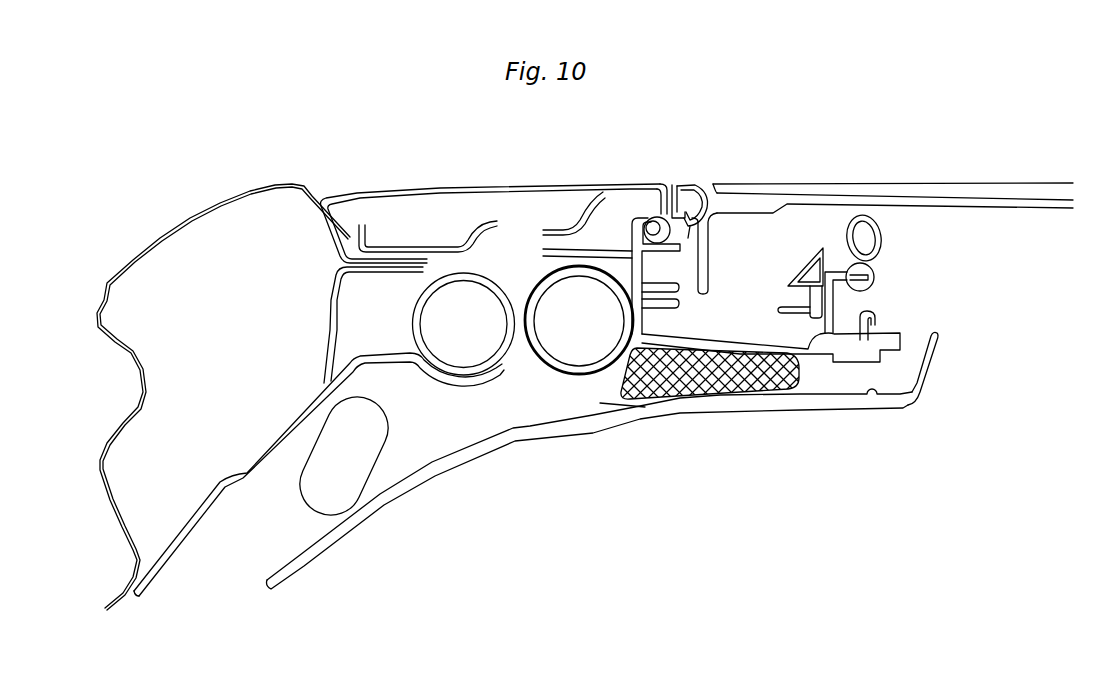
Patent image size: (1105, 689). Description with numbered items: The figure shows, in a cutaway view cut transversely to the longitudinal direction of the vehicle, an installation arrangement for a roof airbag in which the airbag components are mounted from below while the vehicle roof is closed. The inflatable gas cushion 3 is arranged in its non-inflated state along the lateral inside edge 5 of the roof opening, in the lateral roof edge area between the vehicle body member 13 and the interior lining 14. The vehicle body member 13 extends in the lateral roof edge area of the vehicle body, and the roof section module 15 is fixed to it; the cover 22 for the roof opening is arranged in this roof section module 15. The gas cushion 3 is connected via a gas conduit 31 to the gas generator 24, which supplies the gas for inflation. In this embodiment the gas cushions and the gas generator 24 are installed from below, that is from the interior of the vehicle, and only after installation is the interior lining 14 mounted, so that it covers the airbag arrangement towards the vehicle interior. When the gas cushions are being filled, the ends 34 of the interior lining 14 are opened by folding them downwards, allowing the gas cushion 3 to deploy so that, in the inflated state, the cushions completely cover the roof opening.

The vehicle body member 13 is at (272, 197).
The roof section module 15 is at (680, 154).
The cover 22 is at (955, 188).
The lateral inside edge 5 is at (902, 298).
The ends of interior lining 34 is at (936, 350).
The inflatable gas cushion 3 is at (740, 378).
The interior lining 14 is at (678, 408).
The gas conduit 31 is at (627, 360).
The gas generator 24 is at (567, 345).